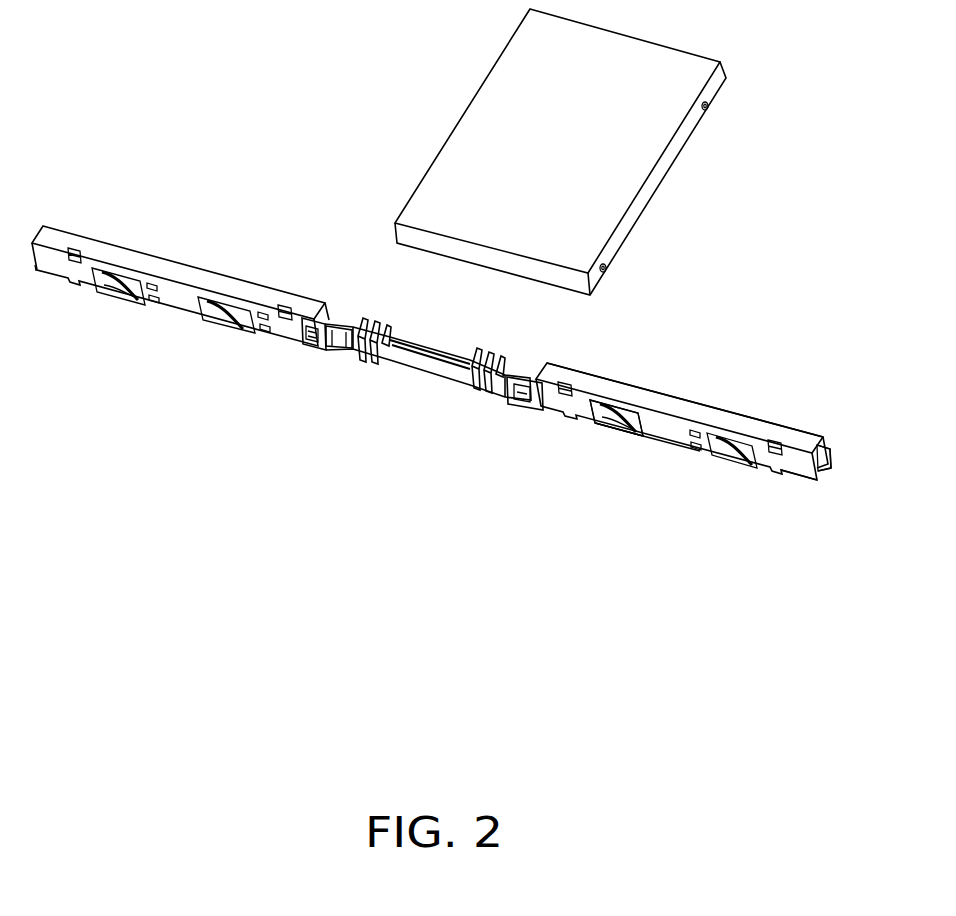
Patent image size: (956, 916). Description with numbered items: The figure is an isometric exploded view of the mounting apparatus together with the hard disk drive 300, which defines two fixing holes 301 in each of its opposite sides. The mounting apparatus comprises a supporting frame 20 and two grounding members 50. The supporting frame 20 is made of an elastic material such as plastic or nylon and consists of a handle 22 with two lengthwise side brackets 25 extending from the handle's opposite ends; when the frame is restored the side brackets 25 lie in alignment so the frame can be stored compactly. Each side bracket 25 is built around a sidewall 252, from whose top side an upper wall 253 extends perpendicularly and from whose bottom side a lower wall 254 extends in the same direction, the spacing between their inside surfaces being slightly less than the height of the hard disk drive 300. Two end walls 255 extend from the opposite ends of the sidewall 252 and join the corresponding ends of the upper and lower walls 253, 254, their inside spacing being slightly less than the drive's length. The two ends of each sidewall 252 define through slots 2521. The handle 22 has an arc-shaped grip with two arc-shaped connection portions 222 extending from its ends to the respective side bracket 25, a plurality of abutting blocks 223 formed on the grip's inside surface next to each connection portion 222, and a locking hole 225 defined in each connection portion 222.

The hard disk drive 300 is at (512, 133).
The fixing holes 301 is at (607, 269).
The supporting frame 20 is at (547, 487).
The handle 22 is at (430, 365).
The connection portions 222 is at (337, 345).
The abutting blocks 223 is at (370, 322).
The locking hole 225 is at (303, 343).
The side brackets 25 is at (585, 385).
The sidewall 252 is at (667, 432).
The through slots 2521 is at (603, 427).
The upper wall 253 is at (695, 418).
The lower wall 254 is at (797, 483).
The end walls 255 is at (832, 443).
The grounding members 50 is at (125, 287).